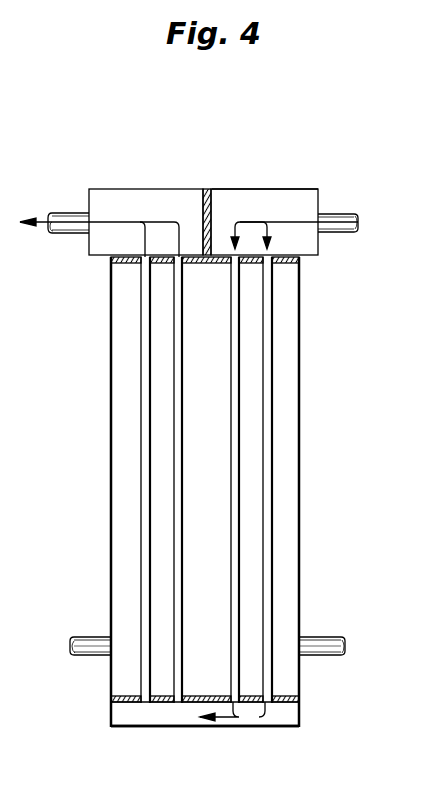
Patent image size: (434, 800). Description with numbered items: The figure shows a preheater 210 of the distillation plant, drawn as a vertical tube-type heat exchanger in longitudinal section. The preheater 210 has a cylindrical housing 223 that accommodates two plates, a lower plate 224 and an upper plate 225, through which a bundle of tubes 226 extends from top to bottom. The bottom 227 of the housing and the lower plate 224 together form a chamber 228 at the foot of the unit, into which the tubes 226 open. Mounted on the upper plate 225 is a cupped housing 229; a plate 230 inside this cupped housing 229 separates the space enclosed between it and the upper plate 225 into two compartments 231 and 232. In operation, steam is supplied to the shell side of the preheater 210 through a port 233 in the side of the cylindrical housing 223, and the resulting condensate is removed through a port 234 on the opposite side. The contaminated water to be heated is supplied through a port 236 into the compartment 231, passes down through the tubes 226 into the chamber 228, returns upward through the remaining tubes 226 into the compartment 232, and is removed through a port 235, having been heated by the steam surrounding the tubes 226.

The preheater 210 is at (246, 176).
The cylindrical housing 223 is at (300, 313).
The lower plate 224 is at (300, 699).
The upper plate 225 is at (299, 263).
The bundle of tubes 226 is at (145, 426).
The bottom of the housing 227 is at (125, 728).
The chamber 228 is at (290, 718).
The cupped housing 229 is at (272, 189).
The plate 230 is at (204, 196).
The compartment 231 is at (286, 205).
The compartment 232 is at (113, 198).
The port 233 is at (90, 643).
The port 234 is at (330, 643).
The port 235 is at (70, 233).
The port 236 is at (338, 218).